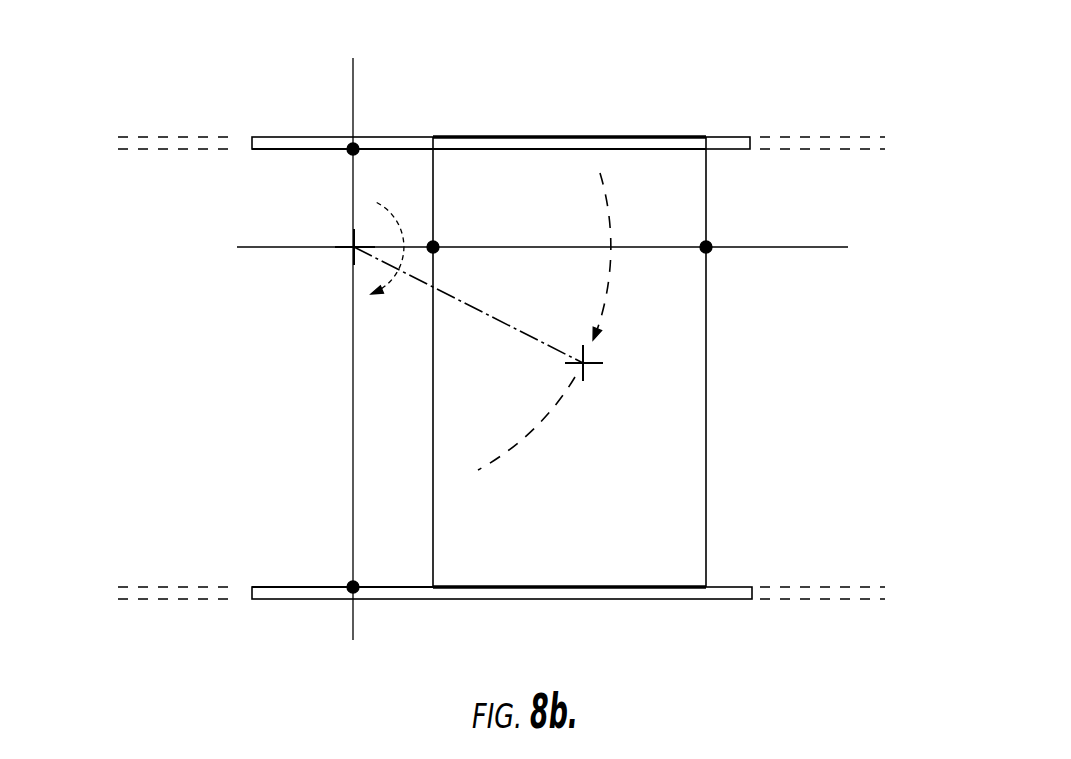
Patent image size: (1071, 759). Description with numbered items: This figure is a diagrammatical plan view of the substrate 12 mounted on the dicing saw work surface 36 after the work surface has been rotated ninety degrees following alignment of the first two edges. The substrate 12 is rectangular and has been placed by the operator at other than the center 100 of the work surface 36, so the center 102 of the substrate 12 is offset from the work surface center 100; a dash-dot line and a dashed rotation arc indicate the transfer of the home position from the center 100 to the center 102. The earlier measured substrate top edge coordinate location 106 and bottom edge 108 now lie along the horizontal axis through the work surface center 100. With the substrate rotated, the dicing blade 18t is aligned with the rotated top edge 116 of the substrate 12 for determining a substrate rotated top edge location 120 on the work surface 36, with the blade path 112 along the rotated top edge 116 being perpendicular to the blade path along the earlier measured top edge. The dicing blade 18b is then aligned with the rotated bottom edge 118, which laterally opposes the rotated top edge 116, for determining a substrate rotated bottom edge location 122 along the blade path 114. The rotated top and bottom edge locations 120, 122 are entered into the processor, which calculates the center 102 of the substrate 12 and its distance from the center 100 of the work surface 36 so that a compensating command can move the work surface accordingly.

The substrate 12 is at (631, 492).
The work surface 36 is at (308, 422).
The dicing blade (top position) 18t is at (752, 142).
The dicing blade (bottom position) 18b is at (742, 593).
The center of the work surface 100 is at (350, 250).
The center of the substrate 102 is at (578, 366).
The substrate top edge coordinate location 106 is at (708, 245).
The bottom edge of the substrate 108 is at (437, 244).
The blade path along top edge 112 is at (875, 141).
The blade path along bottom edge 114 is at (850, 587).
The rotated top edge 116 is at (500, 137).
The rotated bottom edge 118 is at (620, 587).
The substrate rotated top edge location 120 is at (352, 153).
The substrate rotated bottom edge location 122 is at (351, 584).